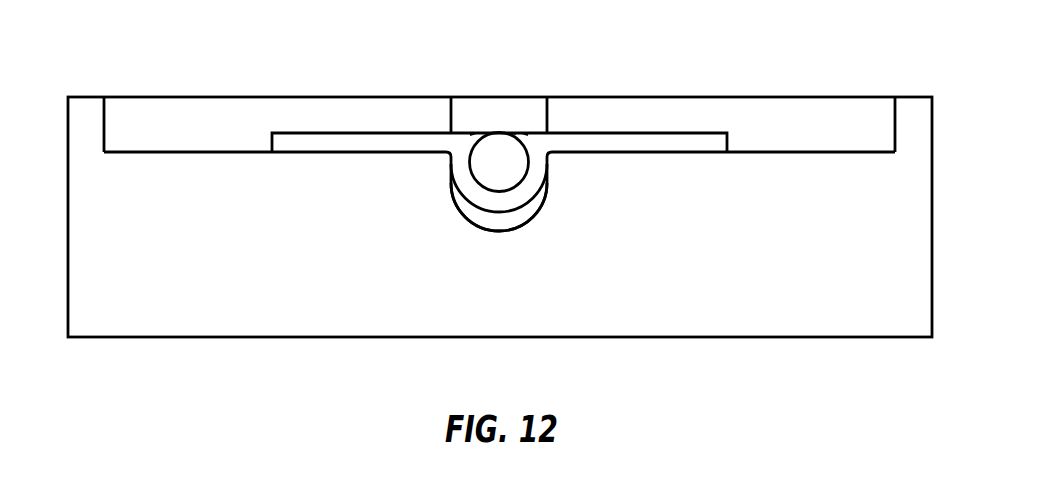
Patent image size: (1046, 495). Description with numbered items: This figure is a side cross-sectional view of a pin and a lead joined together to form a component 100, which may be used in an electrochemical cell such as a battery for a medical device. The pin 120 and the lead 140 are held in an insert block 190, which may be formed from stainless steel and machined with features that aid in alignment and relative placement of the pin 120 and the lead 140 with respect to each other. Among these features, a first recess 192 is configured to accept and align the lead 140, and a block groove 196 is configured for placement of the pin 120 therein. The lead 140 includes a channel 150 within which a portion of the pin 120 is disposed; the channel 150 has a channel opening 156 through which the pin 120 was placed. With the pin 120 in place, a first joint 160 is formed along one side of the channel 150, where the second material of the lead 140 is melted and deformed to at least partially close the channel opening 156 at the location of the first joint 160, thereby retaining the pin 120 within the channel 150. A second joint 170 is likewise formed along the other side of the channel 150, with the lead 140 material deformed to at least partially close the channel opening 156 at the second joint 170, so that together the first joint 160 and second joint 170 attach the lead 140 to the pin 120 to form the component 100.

The component 100 is at (500, 203).
The pin 120 is at (497, 147).
The lead 140 is at (629, 140).
The channel 150 is at (488, 190).
The channel opening 156 is at (515, 137).
The first joint 160 is at (472, 138).
The second joint 170 is at (523, 137).
The insert block 190 is at (247, 322).
The first recess 192 is at (338, 105).
The block groove 196 is at (522, 212).